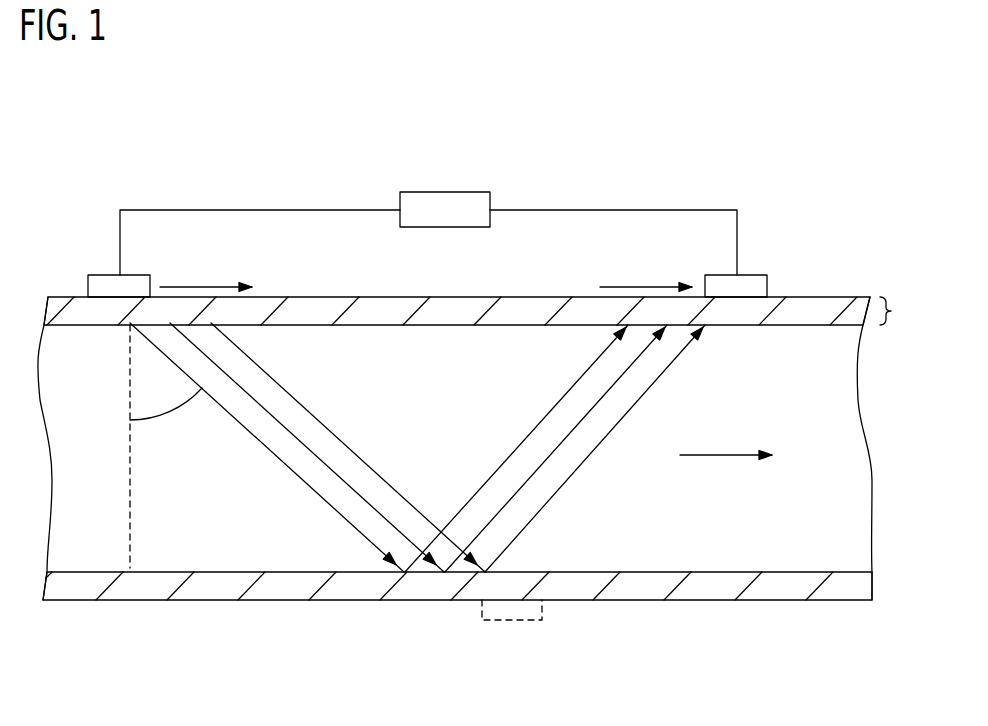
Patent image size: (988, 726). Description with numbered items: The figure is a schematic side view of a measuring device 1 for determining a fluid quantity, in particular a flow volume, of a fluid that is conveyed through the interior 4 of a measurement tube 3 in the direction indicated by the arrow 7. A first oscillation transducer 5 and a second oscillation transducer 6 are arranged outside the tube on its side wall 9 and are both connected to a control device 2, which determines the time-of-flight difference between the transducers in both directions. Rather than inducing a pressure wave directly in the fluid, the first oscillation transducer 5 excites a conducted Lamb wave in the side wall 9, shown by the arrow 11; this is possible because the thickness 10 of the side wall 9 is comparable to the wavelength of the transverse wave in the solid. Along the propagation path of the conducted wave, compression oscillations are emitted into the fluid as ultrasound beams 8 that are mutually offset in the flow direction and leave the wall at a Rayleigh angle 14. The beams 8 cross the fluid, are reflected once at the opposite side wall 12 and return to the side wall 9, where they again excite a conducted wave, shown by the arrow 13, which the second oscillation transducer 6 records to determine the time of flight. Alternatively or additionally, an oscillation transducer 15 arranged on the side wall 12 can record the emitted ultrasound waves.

The measuring device 1 is at (622, 135).
The control device 2 is at (447, 192).
The measurement tube 3 is at (645, 600).
The interior 4 is at (78, 537).
The first oscillation transducer 5 is at (105, 275).
The second oscillation transducer 6 is at (747, 275).
The arrow 7 is at (712, 455).
The ultrasound beam 8 is at (332, 430).
The side wall 9 is at (317, 310).
The thickness 10 is at (902, 312).
The arrow 11 is at (197, 287).
The opposite side wall 12 is at (720, 585).
The arrow 13 is at (638, 287).
The Rayleigh angle 14 is at (163, 413).
The oscillation transducer 15 is at (515, 620).